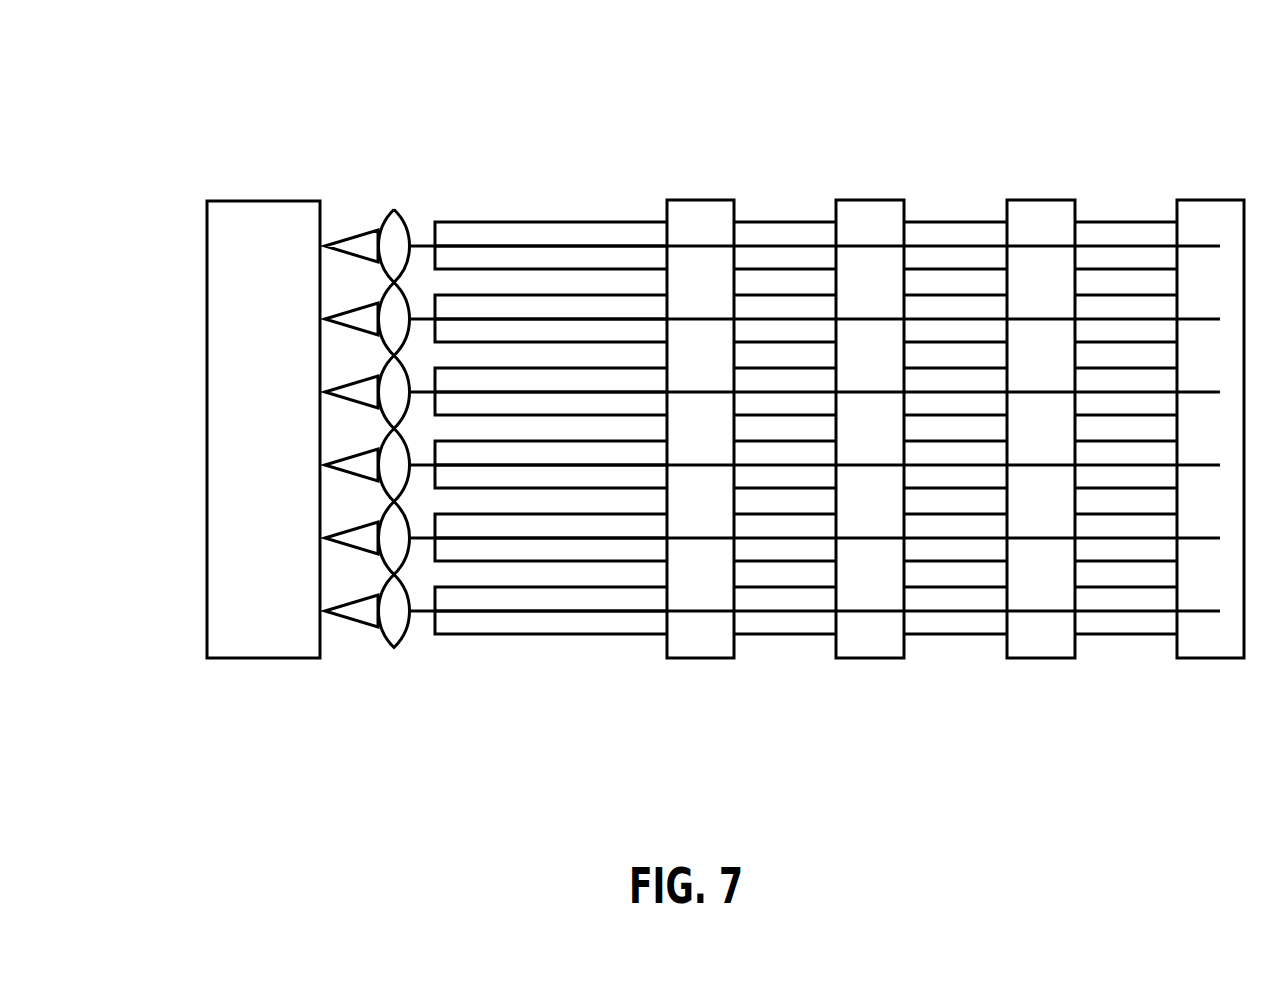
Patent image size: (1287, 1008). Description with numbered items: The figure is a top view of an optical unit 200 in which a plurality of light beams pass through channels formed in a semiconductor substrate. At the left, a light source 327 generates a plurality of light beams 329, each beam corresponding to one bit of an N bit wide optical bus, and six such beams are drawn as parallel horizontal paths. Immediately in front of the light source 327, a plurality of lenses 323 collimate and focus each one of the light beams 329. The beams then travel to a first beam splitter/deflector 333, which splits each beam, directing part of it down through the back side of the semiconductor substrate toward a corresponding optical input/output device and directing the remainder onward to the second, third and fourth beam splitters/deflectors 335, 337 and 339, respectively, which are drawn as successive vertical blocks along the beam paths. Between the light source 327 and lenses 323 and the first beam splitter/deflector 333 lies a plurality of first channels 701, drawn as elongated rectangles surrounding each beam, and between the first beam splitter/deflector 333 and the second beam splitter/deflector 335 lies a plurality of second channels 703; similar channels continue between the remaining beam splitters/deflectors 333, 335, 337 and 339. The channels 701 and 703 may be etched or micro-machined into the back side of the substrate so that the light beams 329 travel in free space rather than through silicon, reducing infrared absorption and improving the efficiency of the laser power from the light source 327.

The optical unit 200 is at (1143, 69).
The light source 327 is at (228, 200).
The plurality of lenses 323 is at (393, 209).
The plurality of light beams 329 is at (455, 243).
The first beam splitter/deflector 333 is at (700, 200).
The second beam splitter/deflector 335 is at (873, 200).
The third beam splitter/deflector 337 is at (1047, 199).
The fourth beam splitter/deflector 339 is at (1210, 199).
The plurality of first channels 701 is at (577, 256).
The plurality of second channels 703 is at (770, 257).